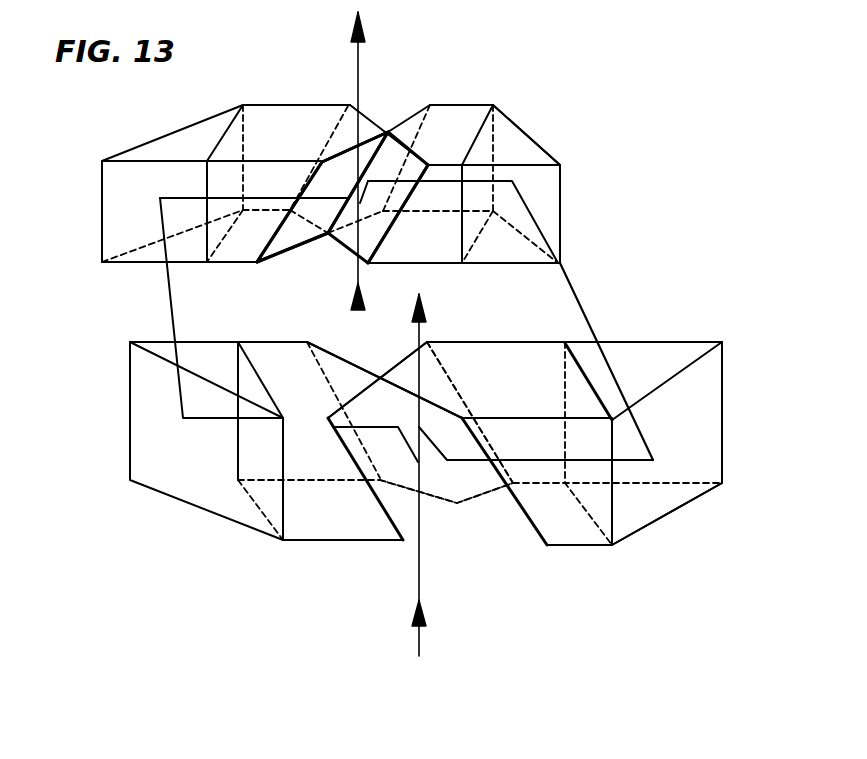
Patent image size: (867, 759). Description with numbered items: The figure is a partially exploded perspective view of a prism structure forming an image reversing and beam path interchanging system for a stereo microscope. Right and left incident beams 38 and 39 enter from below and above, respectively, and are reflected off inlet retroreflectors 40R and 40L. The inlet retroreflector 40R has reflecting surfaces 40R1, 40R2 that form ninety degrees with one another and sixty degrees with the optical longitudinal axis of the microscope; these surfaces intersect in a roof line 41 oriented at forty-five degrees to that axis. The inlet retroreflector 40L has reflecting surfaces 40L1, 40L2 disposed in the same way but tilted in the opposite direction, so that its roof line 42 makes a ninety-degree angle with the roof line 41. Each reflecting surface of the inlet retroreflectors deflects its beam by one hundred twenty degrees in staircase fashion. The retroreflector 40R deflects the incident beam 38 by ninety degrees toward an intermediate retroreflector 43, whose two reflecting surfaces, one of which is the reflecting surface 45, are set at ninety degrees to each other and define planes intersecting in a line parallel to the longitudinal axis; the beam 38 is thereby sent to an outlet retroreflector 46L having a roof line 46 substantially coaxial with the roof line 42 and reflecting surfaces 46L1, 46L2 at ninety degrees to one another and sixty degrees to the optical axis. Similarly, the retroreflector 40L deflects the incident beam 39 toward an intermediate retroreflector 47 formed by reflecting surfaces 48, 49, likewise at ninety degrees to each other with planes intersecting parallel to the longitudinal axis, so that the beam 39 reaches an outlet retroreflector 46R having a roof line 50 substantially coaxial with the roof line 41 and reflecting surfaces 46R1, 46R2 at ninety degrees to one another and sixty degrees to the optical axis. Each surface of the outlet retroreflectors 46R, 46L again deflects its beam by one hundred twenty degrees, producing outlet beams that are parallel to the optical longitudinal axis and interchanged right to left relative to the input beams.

The right incident beam 38 is at (423, 589).
The left incident beam 39 is at (354, 278).
The inlet retroreflector 40L is at (439, 142).
The reflecting surface 40L1 is at (380, 223).
The reflecting surface 40L2 is at (428, 107).
The inlet retroreflector 40R is at (337, 380).
The reflecting surface 40R1 is at (402, 500).
The reflecting surface 40R2 is at (337, 388).
The roof line 41 is at (390, 387).
The roof line 42 is at (386, 156).
The intermediate retroreflector 43 is at (130, 396).
The reflecting surface 45 is at (120, 207).
The roof line 46 is at (388, 165).
The outlet retroreflector 46L is at (324, 131).
The reflecting surface 46L1 is at (278, 243).
The reflecting surface 46L2 is at (337, 147).
The outlet retroreflector 46R is at (436, 386).
The reflecting surface 46R1 is at (523, 497).
The reflecting surface 46R2 is at (446, 399).
The intermediate retroreflector 47 is at (562, 233).
The reflecting surface 48 is at (550, 197).
The reflecting surface 49 is at (662, 423).
The roof line 50 is at (455, 487).